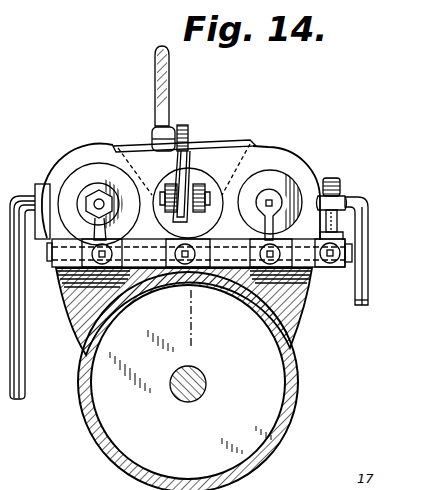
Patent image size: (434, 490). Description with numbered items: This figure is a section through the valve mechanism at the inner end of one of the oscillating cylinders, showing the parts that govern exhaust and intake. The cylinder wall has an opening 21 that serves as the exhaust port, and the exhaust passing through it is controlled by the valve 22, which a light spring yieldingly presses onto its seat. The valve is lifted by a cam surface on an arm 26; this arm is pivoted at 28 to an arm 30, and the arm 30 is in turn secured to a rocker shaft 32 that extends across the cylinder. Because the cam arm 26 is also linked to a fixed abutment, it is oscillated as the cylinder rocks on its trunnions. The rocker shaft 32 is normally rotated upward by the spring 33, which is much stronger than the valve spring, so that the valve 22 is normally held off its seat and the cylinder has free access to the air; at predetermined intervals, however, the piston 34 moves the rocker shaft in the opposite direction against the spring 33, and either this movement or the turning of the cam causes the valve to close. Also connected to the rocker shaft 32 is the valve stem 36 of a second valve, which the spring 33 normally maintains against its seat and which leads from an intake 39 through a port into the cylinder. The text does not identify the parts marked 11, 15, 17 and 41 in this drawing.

The ring base 11 is at (294, 389).
The axis / lever shaft 15 is at (189, 111).
The hub shaft 17 is at (186, 402).
The opening 21 is at (236, 142).
The valve 22 is at (194, 168).
The arm 26 is at (182, 162).
The pivot 28 is at (207, 192).
The arm 30 is at (202, 246).
The rocker shaft 32 is at (48, 266).
The spring 33 is at (340, 196).
The piston 34 is at (282, 188).
The valve stem 36 is at (88, 204).
The intake 39 is at (18, 297).
The right tube 41 is at (366, 251).